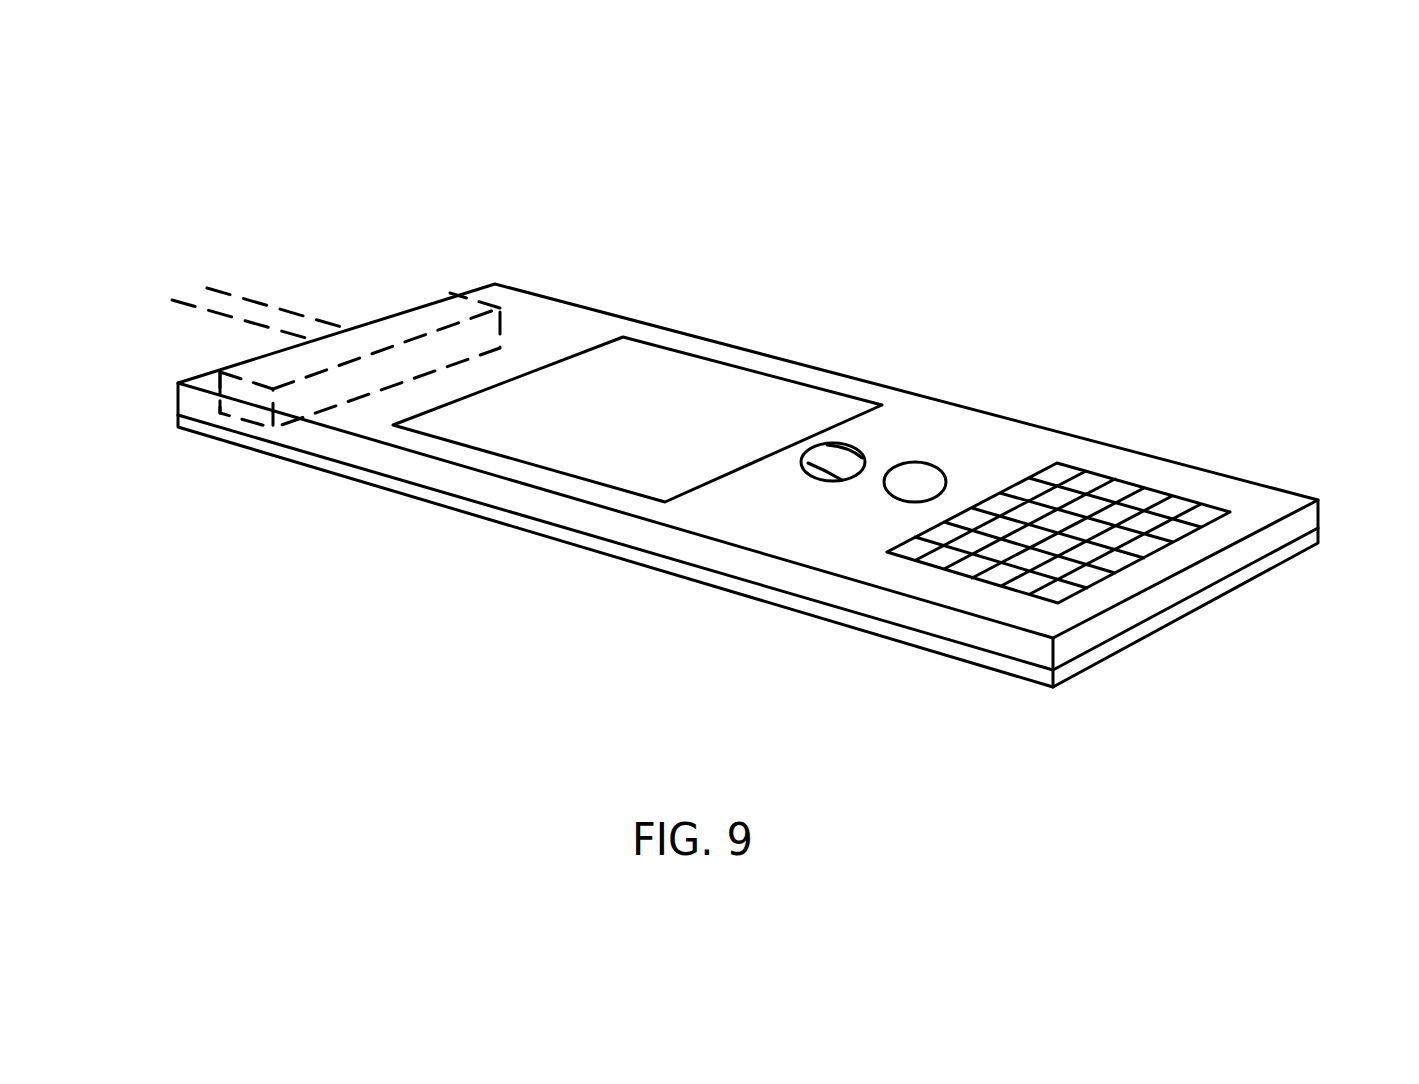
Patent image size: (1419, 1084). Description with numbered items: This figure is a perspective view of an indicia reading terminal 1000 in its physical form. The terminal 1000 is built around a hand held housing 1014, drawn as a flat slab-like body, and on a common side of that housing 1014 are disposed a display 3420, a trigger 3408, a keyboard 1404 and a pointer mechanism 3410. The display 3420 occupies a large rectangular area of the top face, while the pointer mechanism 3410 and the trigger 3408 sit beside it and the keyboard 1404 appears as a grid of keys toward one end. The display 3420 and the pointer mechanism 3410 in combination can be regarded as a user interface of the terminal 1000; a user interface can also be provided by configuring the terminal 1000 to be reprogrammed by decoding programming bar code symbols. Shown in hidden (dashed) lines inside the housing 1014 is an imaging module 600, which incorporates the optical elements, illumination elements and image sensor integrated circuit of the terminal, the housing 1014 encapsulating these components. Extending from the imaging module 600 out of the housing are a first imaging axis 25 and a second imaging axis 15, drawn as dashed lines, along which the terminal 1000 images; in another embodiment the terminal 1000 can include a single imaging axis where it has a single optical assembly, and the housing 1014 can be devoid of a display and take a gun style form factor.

The terminal 1000 is at (635, 232).
The hand held housing 1014 is at (1273, 500).
The display 3420 is at (762, 372).
The pointer mechanism 3410 is at (858, 447).
The trigger 3408 is at (948, 465).
The keyboard 1404 is at (1128, 482).
The imaging module 600 is at (427, 316).
The second imaging axis 15 is at (218, 315).
The first imaging axis 25 is at (251, 301).